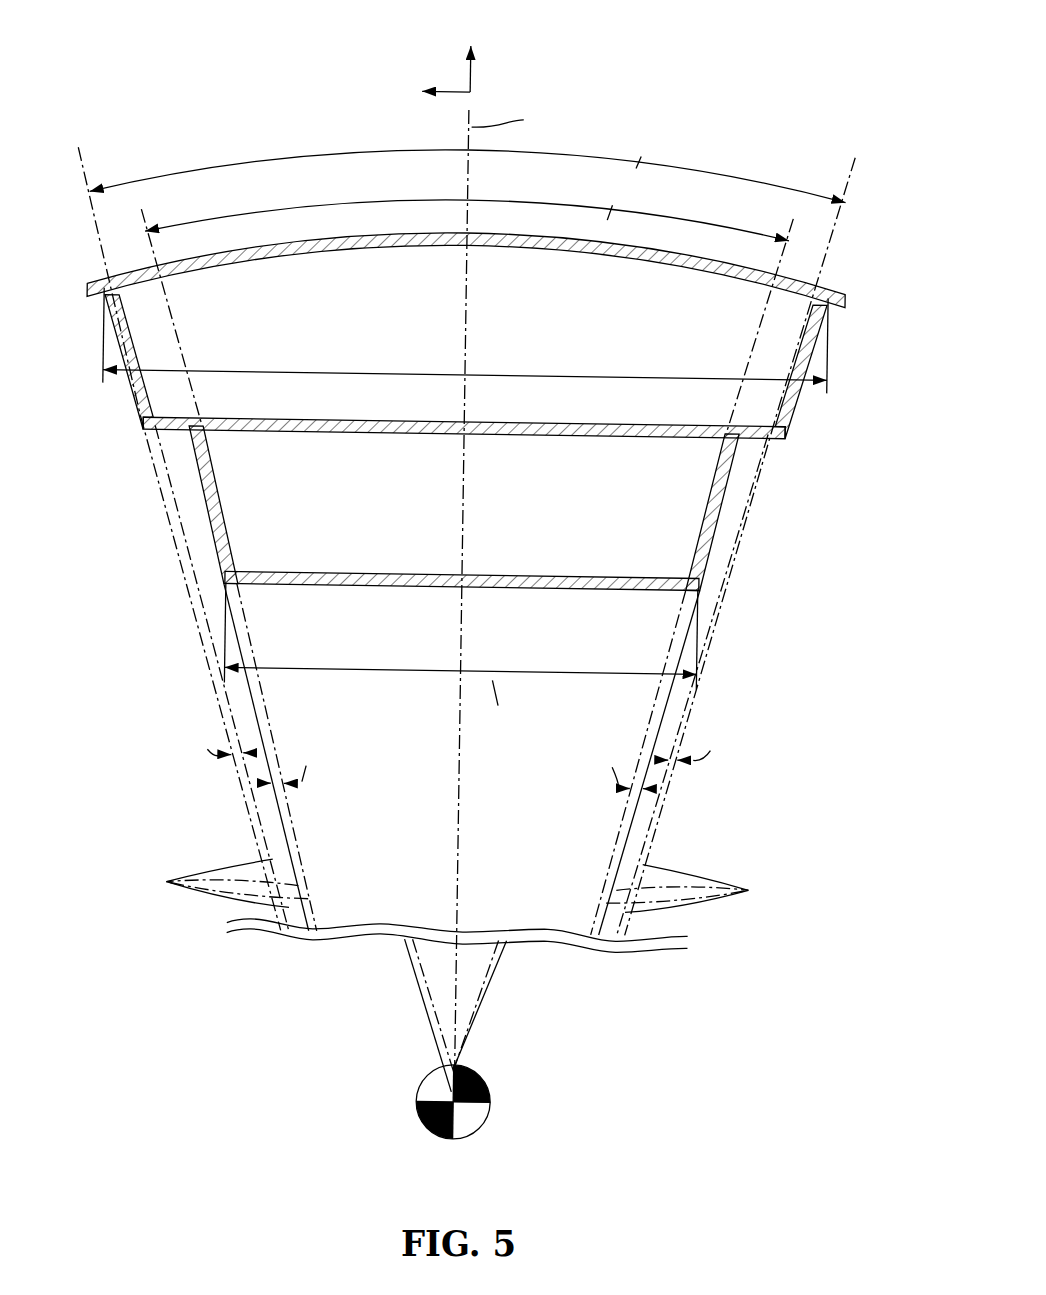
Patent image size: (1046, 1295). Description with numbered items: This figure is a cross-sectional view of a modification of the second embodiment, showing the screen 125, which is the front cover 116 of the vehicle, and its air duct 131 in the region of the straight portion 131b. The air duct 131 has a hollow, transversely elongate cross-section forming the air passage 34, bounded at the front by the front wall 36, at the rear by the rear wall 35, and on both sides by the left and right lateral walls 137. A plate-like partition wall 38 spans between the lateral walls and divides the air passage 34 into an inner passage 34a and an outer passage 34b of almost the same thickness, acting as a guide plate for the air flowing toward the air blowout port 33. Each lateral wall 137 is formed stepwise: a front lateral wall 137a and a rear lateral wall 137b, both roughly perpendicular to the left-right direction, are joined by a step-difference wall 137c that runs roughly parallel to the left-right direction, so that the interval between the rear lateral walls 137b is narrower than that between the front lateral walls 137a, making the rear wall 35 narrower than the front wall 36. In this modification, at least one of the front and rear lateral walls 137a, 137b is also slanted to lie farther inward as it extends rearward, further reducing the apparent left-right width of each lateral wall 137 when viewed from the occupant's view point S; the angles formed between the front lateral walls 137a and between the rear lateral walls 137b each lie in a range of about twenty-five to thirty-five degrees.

The screen 125 is at (834, 57).
The front cover 116 is at (465, 590).
The air duct 131 is at (463, 613).
The straight portion 131b is at (818, 356).
The front wall 36 is at (612, 250).
The partition wall 38 is at (553, 436).
The rear wall 35 is at (601, 589).
The air blowout port 33 is at (542, 556).
The air passage 34 is at (426, 630).
The inner passage 34a is at (408, 521).
The outer passage 34b is at (322, 393).
The left and right lateral walls 137 is at (62, 423).
The front lateral wall 137a is at (136, 402).
The rear lateral wall 137b is at (218, 525).
The step-difference wall 137c is at (165, 436).
The occupant's view point S is at (480, 1127).